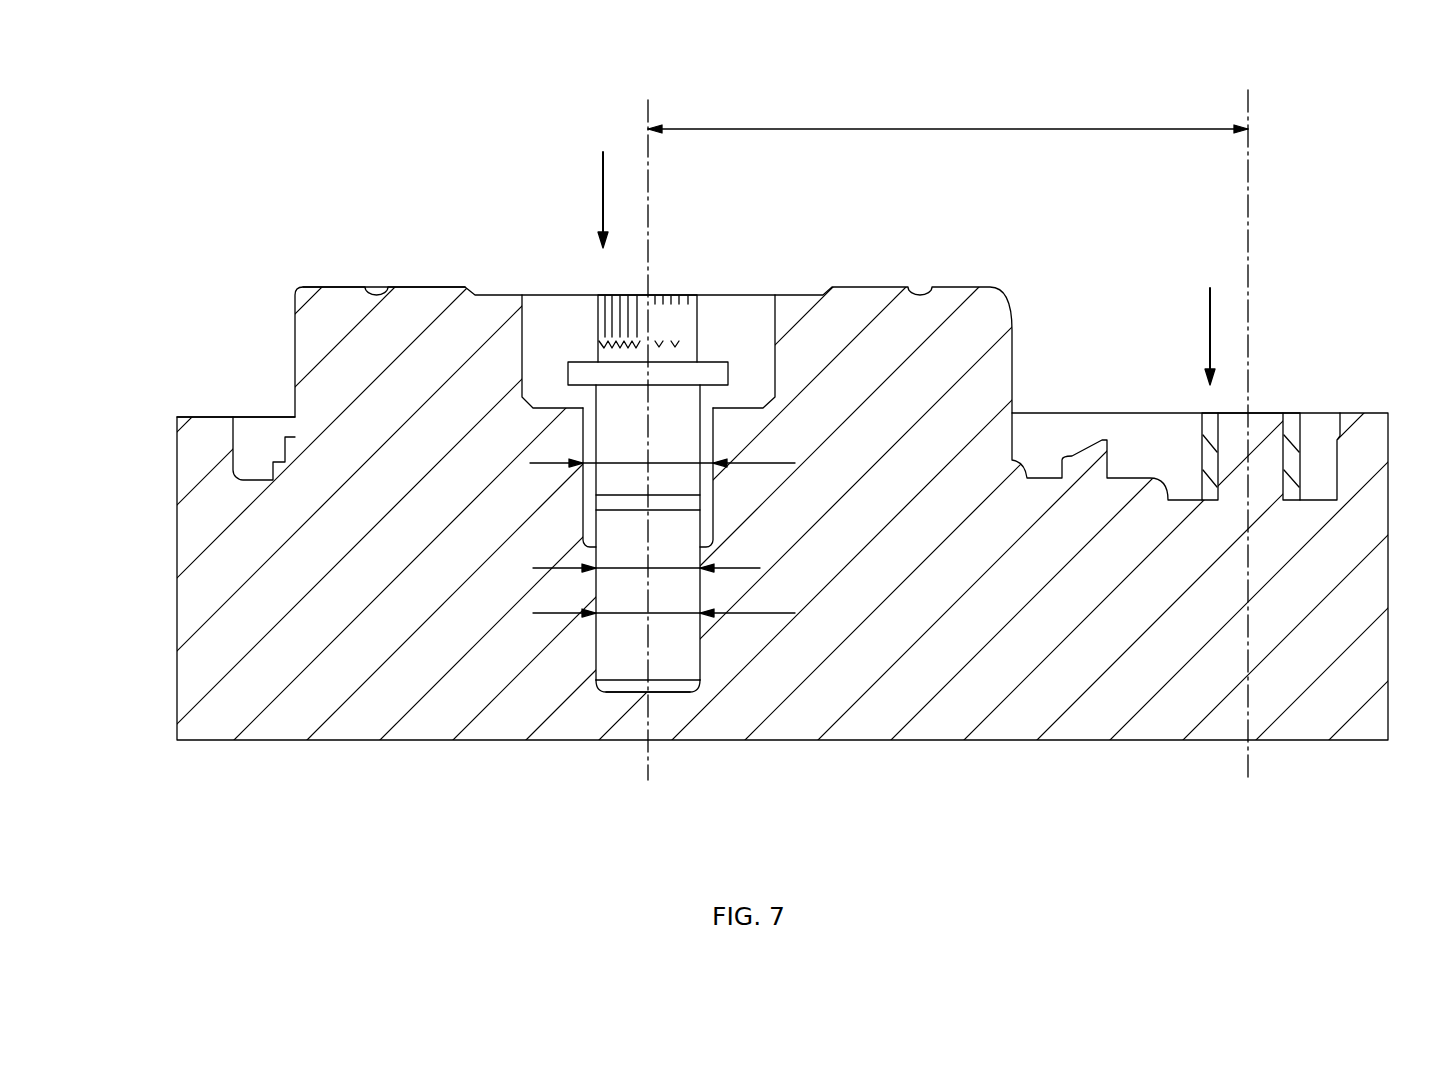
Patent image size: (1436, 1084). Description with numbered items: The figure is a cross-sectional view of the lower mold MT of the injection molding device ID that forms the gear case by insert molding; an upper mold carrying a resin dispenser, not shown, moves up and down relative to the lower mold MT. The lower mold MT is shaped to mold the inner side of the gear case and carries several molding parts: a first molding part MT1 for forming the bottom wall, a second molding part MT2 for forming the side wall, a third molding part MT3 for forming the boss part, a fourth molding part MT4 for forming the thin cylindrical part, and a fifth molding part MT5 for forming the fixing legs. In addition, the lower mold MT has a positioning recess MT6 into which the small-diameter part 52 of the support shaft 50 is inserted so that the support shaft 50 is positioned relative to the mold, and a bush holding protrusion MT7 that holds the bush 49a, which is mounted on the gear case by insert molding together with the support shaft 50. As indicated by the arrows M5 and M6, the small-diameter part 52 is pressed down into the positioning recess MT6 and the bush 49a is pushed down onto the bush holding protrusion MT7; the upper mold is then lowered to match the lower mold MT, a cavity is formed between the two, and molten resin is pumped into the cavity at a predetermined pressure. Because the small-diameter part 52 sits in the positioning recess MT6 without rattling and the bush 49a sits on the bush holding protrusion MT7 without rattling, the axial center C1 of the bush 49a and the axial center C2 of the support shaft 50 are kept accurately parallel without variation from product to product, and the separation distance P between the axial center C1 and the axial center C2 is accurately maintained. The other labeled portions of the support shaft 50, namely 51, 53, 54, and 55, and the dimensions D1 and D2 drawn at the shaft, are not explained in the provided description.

The lower mold MT is at (962, 632).
The first molding part MT1 is at (420, 287).
The second molding part MT2 is at (248, 435).
The third molding part MT3 is at (773, 352).
The fourth molding part MT4 is at (585, 438).
The fifth molding part MT5 is at (1320, 445).
The positioning recess MT6 is at (697, 645).
The bush holding protrusion MT7 is at (1268, 450).
The bush 49a is at (1208, 460).
The support shaft 50 is at (591, 656).
The first hole portion 51 is at (690, 446).
The small-diameter part 52 is at (638, 675).
The step portion 53 is at (622, 505).
The flange 54 is at (703, 372).
The threaded portion 55 is at (690, 342).
The axial center of the bush C1 is at (1250, 228).
The axial center of the support shaft C2 is at (648, 163).
The separation distance P is at (948, 112).
The first diameter D1 is at (662, 446).
The second diameter D2 is at (664, 590).
The arrow M5 is at (584, 200).
The arrow M6 is at (1191, 336).
The injection molding device ID is at (453, 167).